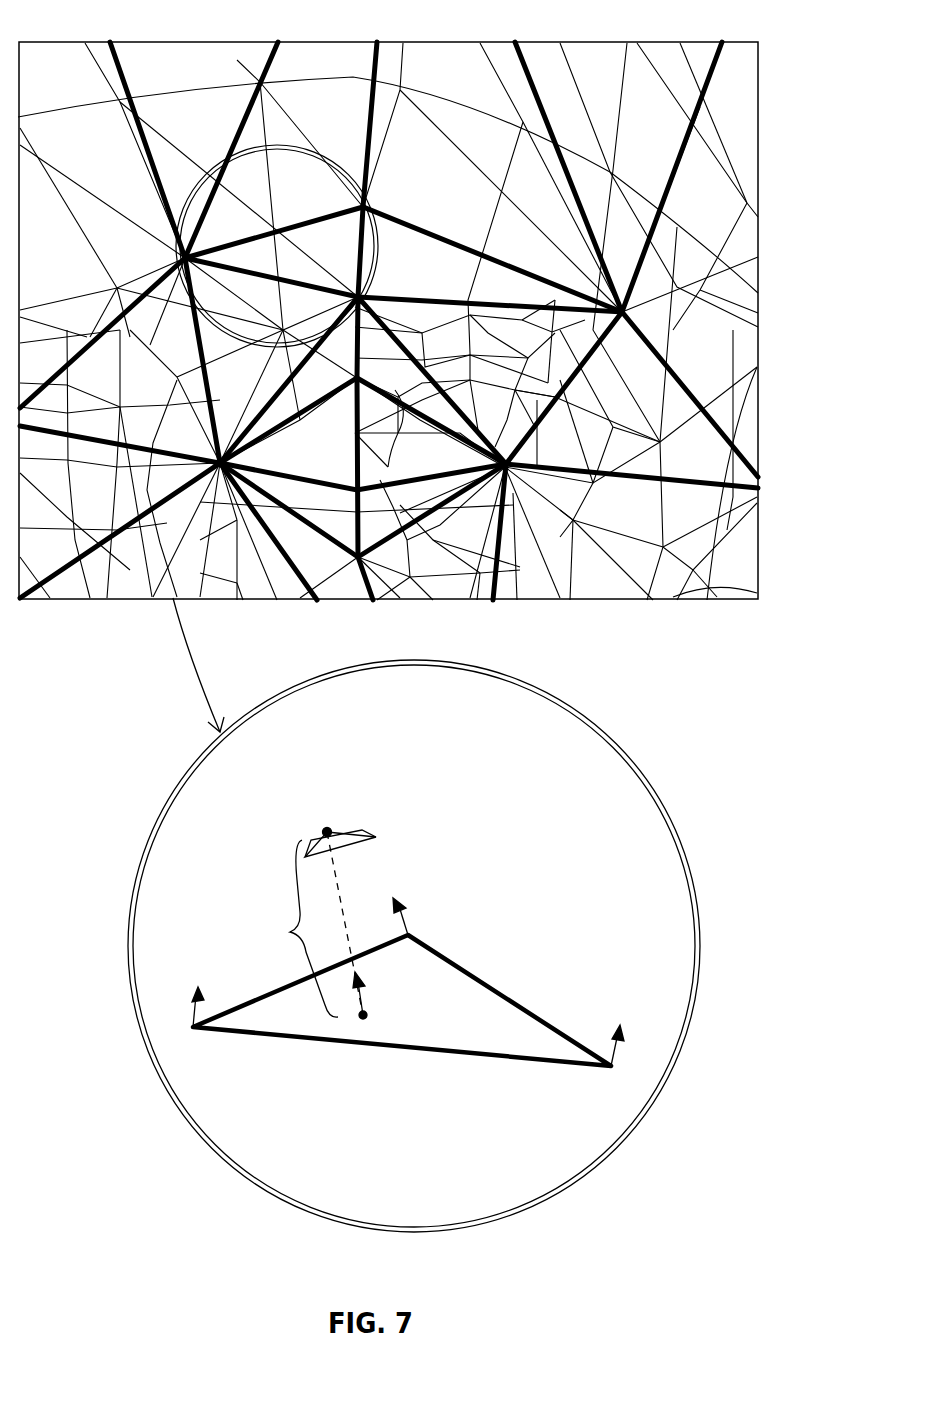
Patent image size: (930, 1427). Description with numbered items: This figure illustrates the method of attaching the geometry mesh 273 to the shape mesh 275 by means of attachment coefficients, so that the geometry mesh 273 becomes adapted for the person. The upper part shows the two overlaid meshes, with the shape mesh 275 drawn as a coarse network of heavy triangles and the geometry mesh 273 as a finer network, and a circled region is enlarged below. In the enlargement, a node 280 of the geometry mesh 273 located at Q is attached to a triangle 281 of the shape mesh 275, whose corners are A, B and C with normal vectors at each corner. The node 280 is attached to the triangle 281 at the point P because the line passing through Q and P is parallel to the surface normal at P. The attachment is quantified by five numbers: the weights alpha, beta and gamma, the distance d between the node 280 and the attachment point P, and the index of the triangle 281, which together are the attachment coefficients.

The geometry mesh 273 is at (573, 583).
The shape mesh 275 is at (700, 582).
The node 280 is at (327, 832).
The triangle 281 is at (453, 1005).